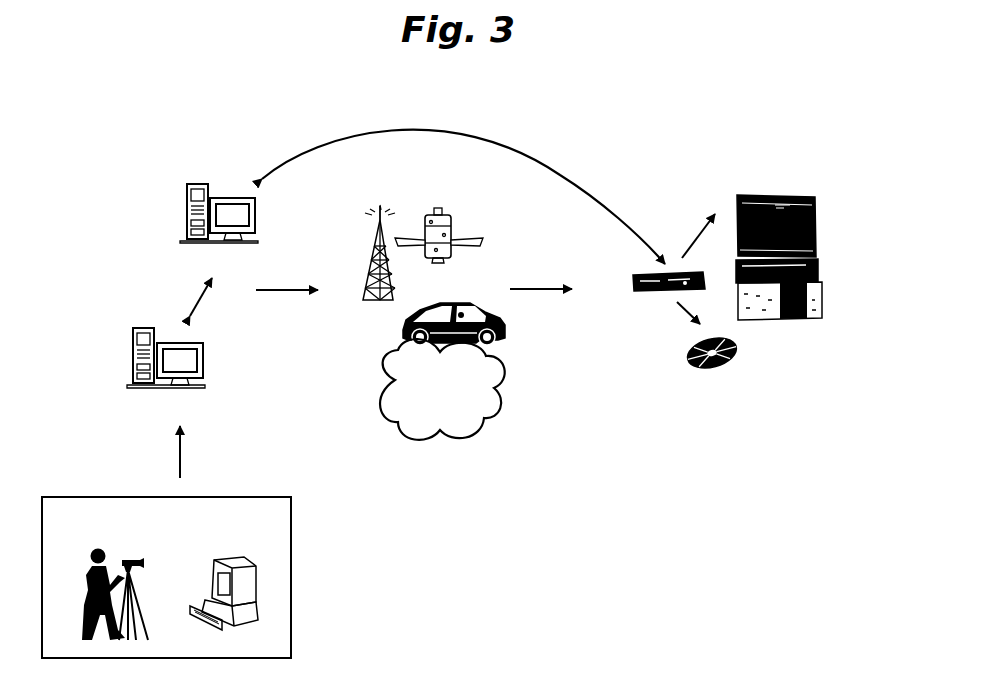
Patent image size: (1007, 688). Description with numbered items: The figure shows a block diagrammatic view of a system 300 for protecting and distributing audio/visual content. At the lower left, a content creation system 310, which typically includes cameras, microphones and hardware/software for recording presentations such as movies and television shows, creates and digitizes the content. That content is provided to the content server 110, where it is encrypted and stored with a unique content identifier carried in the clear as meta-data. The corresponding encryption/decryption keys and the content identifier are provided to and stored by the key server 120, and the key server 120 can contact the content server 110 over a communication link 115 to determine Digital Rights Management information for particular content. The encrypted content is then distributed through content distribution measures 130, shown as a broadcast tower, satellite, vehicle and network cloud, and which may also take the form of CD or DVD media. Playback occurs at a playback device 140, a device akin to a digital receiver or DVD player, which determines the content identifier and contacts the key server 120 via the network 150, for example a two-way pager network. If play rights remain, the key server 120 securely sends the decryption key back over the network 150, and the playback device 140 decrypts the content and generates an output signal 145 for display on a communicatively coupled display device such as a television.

The system 300 is at (276, 111).
The content server 110 is at (182, 359).
The communication link 115 is at (182, 299).
The key server 120 is at (190, 211).
The content distribution measures 130 is at (340, 382).
The playback device 140 is at (789, 358).
The output signal 145 is at (697, 223).
The network 150 is at (507, 152).
The content creation system 310 is at (280, 610).